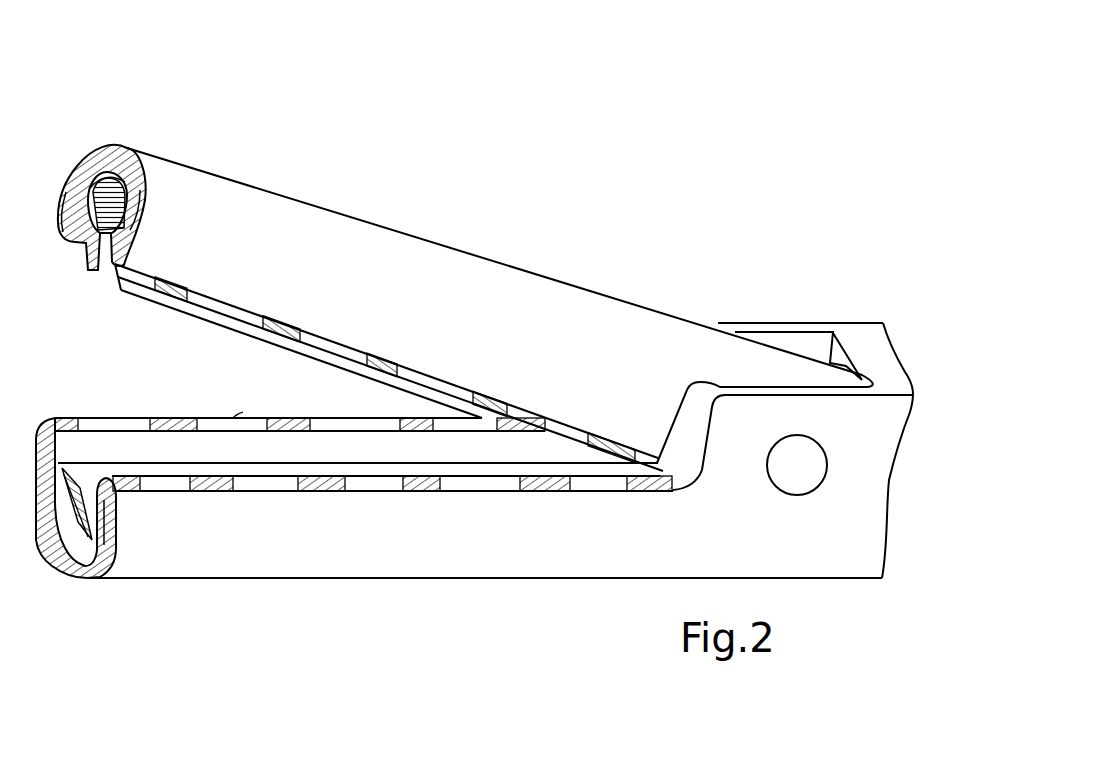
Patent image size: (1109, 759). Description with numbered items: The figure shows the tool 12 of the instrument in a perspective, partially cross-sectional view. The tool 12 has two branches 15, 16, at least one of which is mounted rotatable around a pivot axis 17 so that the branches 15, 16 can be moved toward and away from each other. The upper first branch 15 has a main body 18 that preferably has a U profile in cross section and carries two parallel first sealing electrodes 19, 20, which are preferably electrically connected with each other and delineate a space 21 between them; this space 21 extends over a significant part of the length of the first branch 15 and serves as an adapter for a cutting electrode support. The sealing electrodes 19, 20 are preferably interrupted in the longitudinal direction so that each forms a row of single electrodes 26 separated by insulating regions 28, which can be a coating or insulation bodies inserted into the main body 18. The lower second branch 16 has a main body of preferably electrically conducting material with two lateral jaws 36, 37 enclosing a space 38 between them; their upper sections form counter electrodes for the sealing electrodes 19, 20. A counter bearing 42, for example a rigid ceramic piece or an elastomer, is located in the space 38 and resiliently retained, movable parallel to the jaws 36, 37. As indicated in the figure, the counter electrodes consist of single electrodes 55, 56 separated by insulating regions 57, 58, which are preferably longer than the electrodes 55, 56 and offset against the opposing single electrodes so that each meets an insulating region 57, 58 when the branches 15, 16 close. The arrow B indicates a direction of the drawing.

The tool 12 is at (558, 168).
The first branch 15 is at (294, 165).
The second branch 16 is at (313, 600).
The pivot axis 17 is at (797, 470).
The main body 18 is at (113, 163).
The sealing electrode 19 is at (67, 207).
The sealing electrode 20 is at (133, 228).
The space 21 is at (90, 222).
The single electrode 26 is at (373, 362).
The insulating region 28 is at (232, 308).
The lateral jaw 36 is at (42, 473).
The lateral jaw 37 is at (108, 514).
The space 38 is at (358, 464).
The counter bearing 42 is at (68, 568).
The single electrode 55 is at (73, 413).
The single electrode 56 is at (313, 492).
The insulating region 57 is at (233, 418).
The insulating region 58 is at (475, 488).
The direction B is at (78, 300).